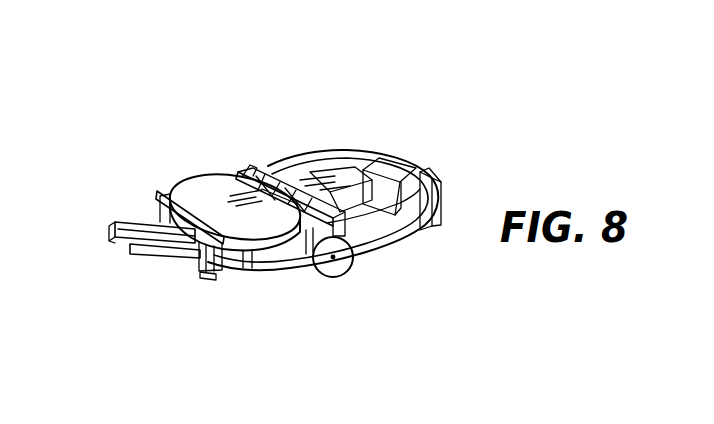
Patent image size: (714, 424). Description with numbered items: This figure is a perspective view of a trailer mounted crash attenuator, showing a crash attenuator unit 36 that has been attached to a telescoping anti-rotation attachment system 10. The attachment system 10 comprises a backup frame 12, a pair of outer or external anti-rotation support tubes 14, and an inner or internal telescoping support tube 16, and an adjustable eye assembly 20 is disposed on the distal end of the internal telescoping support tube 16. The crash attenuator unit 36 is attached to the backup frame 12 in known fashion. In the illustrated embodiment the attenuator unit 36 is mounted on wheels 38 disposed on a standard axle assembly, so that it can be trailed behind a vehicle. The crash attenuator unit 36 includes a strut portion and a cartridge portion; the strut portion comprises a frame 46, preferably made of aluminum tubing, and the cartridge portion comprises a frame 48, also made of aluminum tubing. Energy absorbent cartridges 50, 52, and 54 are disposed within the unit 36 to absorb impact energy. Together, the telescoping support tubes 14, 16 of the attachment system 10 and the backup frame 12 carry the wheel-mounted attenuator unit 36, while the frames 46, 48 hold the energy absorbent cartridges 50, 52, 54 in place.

The telescoping anti-rotation attachment system 10 is at (153, 262).
The backup frame 12 is at (205, 283).
The external anti-rotation support tubes 14 is at (130, 222).
The internal telescoping support tube 16 is at (130, 256).
The adjustable eye assembly 20 is at (113, 240).
The crash attenuator unit 36 is at (299, 137).
The wheels 38 is at (335, 268).
The frame 46 is at (271, 268).
The frame 48 is at (352, 160).
The energy absorbent cartridge 50 is at (215, 195).
The energy absorbent cartridge 52 is at (340, 205).
The energy absorbent cartridge 54 is at (412, 162).